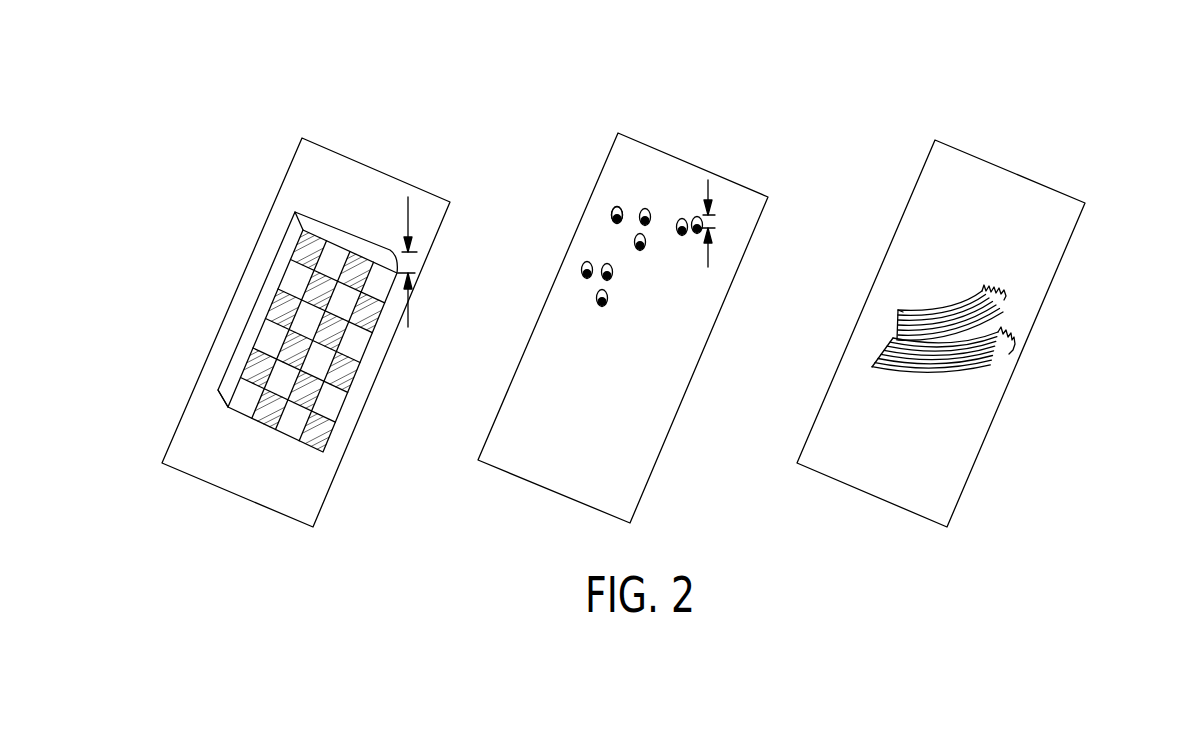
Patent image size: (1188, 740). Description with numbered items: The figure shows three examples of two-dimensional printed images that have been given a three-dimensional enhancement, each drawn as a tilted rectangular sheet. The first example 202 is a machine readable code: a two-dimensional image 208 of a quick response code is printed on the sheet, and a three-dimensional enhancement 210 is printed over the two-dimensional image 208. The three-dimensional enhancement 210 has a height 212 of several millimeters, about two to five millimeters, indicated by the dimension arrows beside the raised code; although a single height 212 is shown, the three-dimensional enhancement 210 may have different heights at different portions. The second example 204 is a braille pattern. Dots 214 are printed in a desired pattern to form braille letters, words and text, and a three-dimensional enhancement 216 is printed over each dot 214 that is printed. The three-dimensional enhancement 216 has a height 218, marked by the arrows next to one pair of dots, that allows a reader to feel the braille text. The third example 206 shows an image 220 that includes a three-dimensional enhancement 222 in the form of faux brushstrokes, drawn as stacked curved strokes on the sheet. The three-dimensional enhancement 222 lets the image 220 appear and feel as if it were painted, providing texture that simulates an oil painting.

The example of a machine readable code with a 3D enhancement 202 is at (350, 158).
The example of a braille pattern 204 is at (688, 162).
The example of an image with 3D enhancement 206 is at (1075, 238).
The 2D image 208 is at (288, 302).
The 3D enhancement 210 is at (363, 237).
The height 212 is at (412, 222).
The dots 214 is at (612, 220).
The 3D enhancement 216 is at (612, 213).
The height 218 is at (713, 187).
The image 220 is at (993, 353).
The 3D enhancement 222 is at (1003, 305).